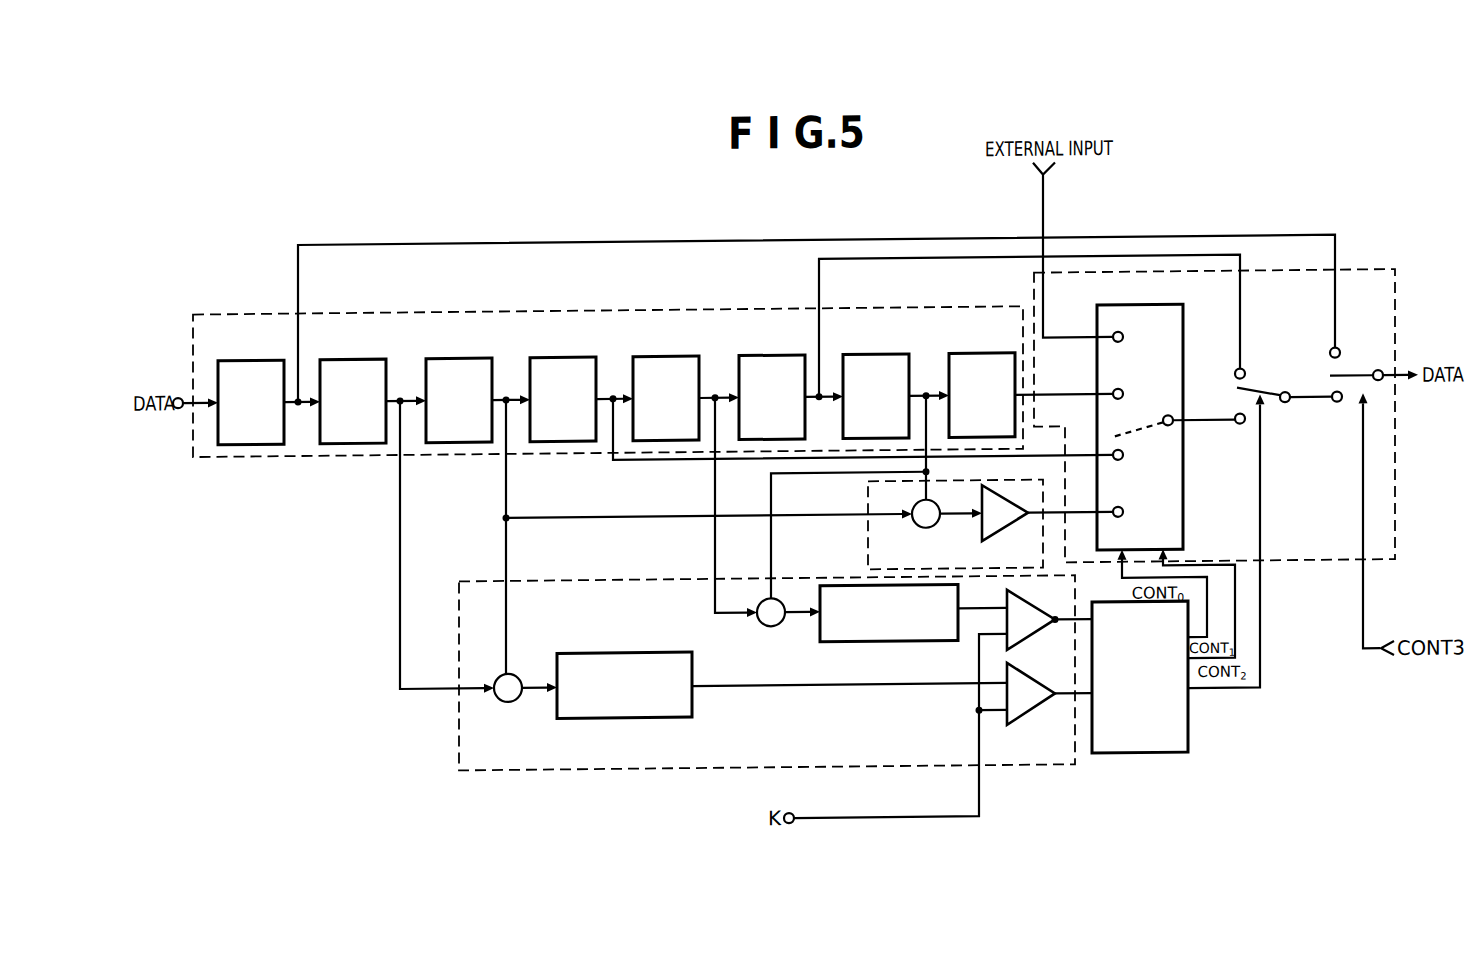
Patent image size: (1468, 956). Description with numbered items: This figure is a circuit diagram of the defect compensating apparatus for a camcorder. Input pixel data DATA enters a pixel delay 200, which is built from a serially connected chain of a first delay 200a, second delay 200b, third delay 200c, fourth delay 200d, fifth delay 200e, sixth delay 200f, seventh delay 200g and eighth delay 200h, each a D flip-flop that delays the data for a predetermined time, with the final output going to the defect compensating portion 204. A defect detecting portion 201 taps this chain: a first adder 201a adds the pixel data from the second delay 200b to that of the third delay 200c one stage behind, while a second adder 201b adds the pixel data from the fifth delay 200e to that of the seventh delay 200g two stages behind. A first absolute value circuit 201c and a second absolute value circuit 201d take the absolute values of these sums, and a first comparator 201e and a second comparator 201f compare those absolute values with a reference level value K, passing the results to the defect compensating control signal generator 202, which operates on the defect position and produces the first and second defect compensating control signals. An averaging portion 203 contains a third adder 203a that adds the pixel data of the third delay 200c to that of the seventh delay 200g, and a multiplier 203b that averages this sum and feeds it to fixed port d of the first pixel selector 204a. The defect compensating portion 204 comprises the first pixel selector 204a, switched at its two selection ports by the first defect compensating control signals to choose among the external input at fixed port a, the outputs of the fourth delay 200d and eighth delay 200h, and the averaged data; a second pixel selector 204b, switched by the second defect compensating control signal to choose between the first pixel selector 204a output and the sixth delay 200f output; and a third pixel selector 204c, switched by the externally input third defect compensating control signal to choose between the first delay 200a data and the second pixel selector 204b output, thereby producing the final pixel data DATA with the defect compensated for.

The pixel delay 200 is at (620, 317).
The first delay 200a is at (252, 367).
The second delay 200b is at (354, 367).
The third delay 200c is at (460, 367).
The fourth delay 200d is at (564, 367).
The fifth delay 200e is at (667, 367).
The sixth delay 200f is at (773, 367).
The seventh delay 200g is at (877, 367).
The eighth delay 200h is at (983, 367).
The defect detecting portion 201 is at (620, 775).
The first adder 201a is at (508, 707).
The second adder 201b is at (771, 634).
The first absolute value circuit 201c is at (607, 659).
The second absolute value circuit 201d is at (845, 650).
The first comparator 201e is at (1041, 720).
The second comparator 201f is at (1040, 646).
The defect compensating control signal generator 202 is at (1143, 764).
The averaging portion 203 is at (880, 506).
The third adder 203a is at (926, 537).
The multiplier 203b is at (1010, 540).
The defect compensating portion 204 is at (1395, 504).
The first pixel selector 204a is at (1183, 504).
The second pixel selector 204b is at (1264, 372).
The third pixel selector 204c is at (1357, 372).